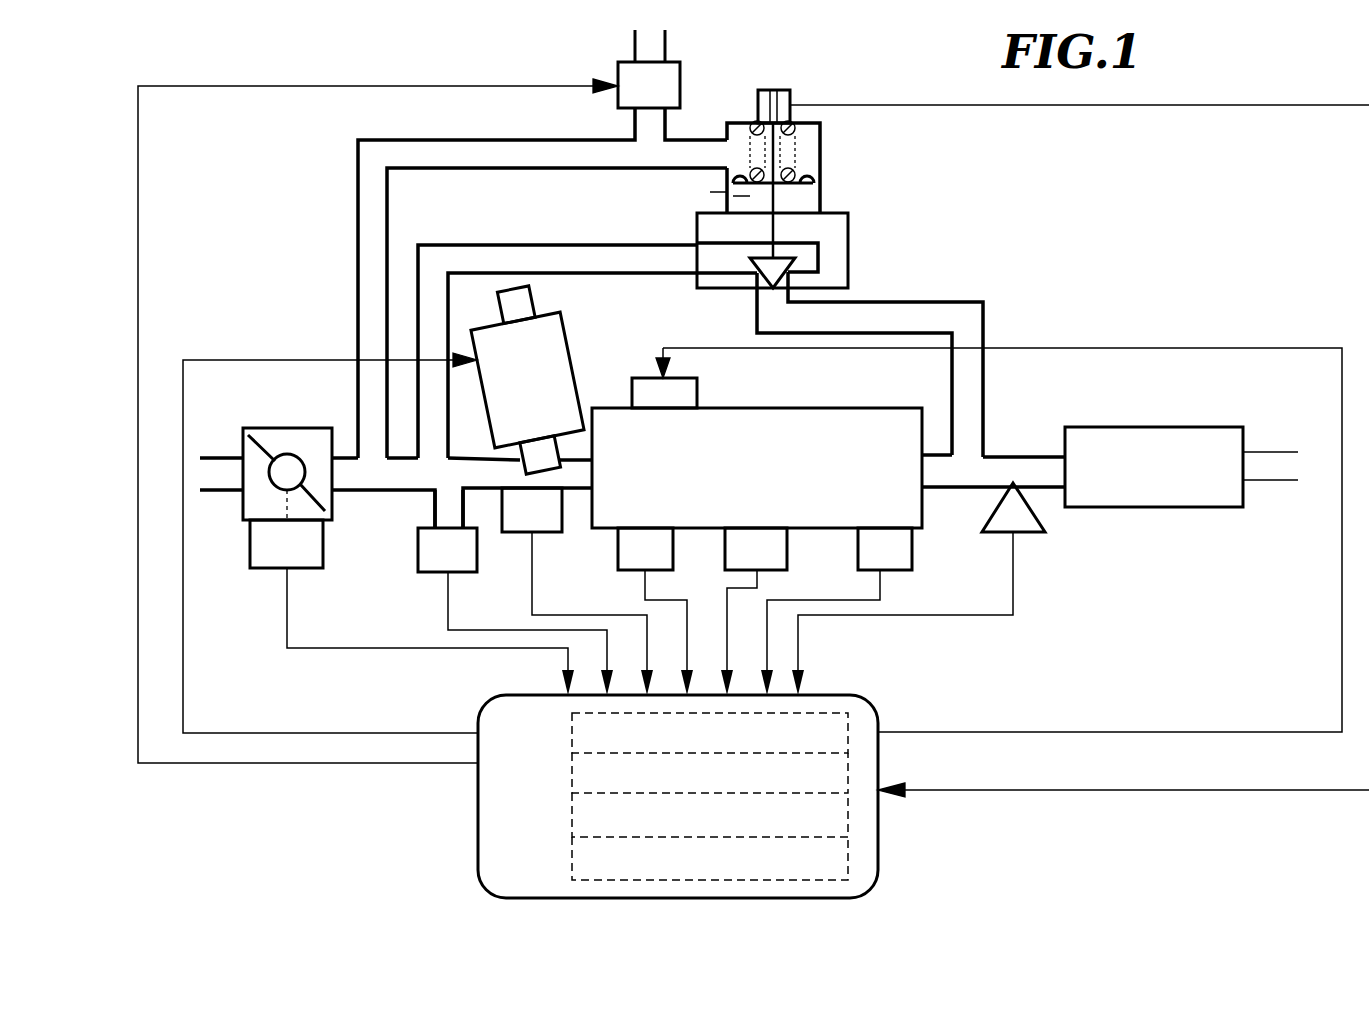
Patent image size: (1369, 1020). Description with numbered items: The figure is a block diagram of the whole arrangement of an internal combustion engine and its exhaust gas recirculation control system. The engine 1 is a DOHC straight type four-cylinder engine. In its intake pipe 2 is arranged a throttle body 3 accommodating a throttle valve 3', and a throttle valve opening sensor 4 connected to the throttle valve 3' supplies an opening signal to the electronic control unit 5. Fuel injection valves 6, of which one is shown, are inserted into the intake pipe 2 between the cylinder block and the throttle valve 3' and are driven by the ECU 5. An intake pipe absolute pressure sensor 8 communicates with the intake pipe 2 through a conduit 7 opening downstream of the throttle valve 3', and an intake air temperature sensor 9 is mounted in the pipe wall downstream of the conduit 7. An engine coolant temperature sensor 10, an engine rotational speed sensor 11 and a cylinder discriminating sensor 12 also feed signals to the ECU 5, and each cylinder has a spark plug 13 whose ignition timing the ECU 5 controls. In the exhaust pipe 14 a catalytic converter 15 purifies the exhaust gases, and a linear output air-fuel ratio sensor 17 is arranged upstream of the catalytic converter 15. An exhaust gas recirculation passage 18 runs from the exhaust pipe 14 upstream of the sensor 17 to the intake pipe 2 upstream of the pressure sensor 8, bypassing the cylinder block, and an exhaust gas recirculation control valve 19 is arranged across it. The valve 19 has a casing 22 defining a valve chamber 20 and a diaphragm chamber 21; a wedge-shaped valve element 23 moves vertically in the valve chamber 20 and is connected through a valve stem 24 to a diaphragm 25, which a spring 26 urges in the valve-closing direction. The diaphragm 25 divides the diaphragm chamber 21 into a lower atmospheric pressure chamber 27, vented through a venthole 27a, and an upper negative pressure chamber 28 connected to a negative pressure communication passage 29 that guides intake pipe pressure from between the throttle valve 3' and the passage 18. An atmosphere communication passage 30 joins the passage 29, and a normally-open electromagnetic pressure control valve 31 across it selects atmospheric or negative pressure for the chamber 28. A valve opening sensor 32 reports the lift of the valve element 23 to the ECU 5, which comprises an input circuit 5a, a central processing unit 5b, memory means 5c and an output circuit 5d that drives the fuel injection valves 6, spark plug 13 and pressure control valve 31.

The internal combustion engine 1 is at (888, 408).
The intake pipe 2 is at (368, 492).
The throttle body 3 is at (269, 451).
The throttle valve 3' is at (288, 451).
The throttle valve opening sensor 4 is at (313, 568).
The electronic control unit 5 is at (477, 817).
The input circuit 5a is at (838, 723).
The central processing unit 5b is at (840, 780).
The memory means 5c is at (838, 820).
The output circuit 5d is at (838, 863).
The fuel injection valve 6 is at (574, 360).
The conduit 7 is at (432, 505).
The intake pipe absolute pressure sensor 8 is at (463, 573).
The intake air temperature sensor 9 is at (529, 527).
The engine coolant temperature sensor 10 is at (616, 545).
The engine rotational speed sensor 11 is at (788, 553).
The cylinder discriminating sensor 12 is at (912, 543).
The spark plug 13 is at (700, 395).
The exhaust pipe 14 is at (1005, 455).
The catalytic converter 15 is at (1138, 427).
The linear output air-fuel ratio sensor 17 is at (1040, 513).
The exhaust gas recirculation passage 18 is at (448, 243).
The exhaust gas recirculation control valve 19 is at (873, 228).
The valve chamber 20 is at (842, 263).
The diaphragm chamber 21 is at (812, 147).
The casing 22 is at (737, 290).
The valve element 23 is at (828, 290).
The valve stem 24 is at (770, 230).
The diaphragm 25 is at (822, 172).
The spring 26 is at (812, 130).
The atmospheric pressure chamber 27 is at (727, 200).
The venthole 27a is at (712, 192).
The negative pressure chamber 28 is at (737, 128).
The negative pressure communication passage 29 is at (680, 138).
The atmosphere communication passage 30 is at (633, 122).
The pressure control valve 31 is at (618, 70).
The valve opening sensor 32 is at (792, 100).